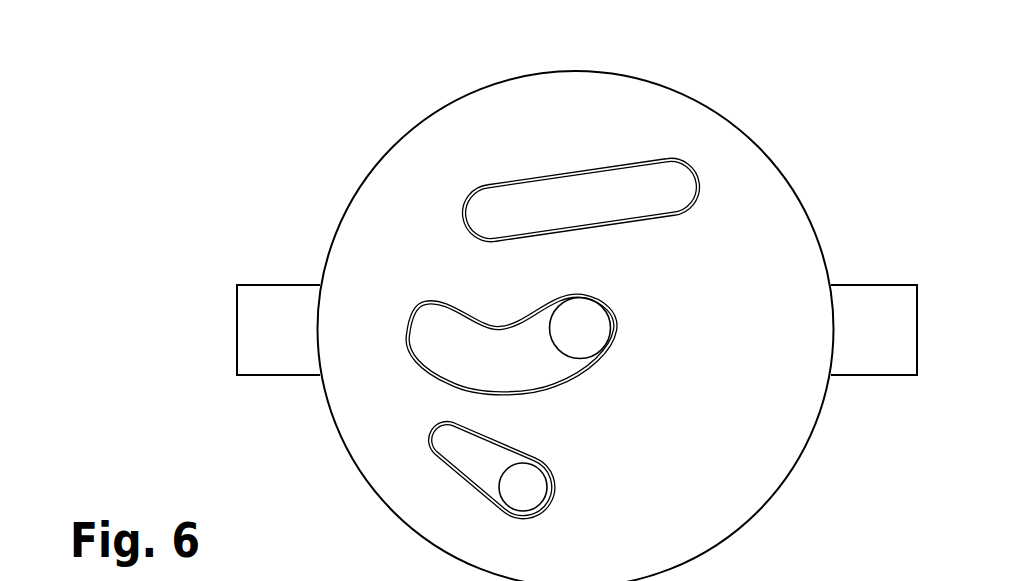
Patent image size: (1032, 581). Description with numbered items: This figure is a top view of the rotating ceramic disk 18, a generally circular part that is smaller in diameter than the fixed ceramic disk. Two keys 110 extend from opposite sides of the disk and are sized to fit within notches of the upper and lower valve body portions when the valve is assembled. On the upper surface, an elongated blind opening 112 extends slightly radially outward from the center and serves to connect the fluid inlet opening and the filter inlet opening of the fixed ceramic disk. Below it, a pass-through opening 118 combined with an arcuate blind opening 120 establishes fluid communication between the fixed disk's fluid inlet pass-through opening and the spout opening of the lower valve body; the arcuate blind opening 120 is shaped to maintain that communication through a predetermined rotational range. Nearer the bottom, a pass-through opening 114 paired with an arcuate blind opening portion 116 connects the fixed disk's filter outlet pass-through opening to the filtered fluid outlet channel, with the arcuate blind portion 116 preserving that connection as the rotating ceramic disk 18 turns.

The rotating ceramic disk 18 is at (760, 134).
The keys 110 is at (253, 285).
The elongated blind opening 112 is at (618, 165).
The pass-through opening 114 is at (548, 493).
The arcuate blind opening portion 116 is at (508, 450).
The pass-through opening 118 is at (603, 315).
The arcuate blind opening 120 is at (418, 312).